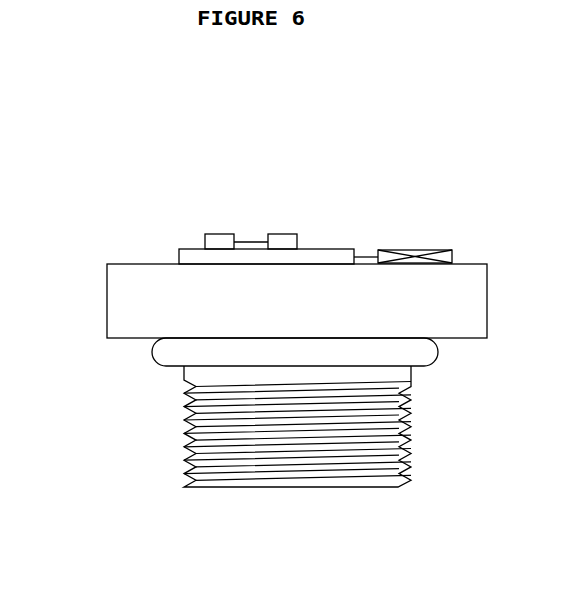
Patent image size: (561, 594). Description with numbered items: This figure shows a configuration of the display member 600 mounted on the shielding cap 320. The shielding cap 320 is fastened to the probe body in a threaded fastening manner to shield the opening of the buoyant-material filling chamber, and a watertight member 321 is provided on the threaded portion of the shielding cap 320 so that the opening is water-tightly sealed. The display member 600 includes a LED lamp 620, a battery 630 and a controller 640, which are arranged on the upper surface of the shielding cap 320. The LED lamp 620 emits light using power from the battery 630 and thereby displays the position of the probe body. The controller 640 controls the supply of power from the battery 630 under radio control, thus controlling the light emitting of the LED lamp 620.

The shielding cap 320 is at (120, 306).
The watertight member 321 is at (172, 352).
The display member 600 is at (298, 168).
The LED lamp 620 is at (282, 241).
The battery 630 is at (220, 241).
The controller 640 is at (403, 195).